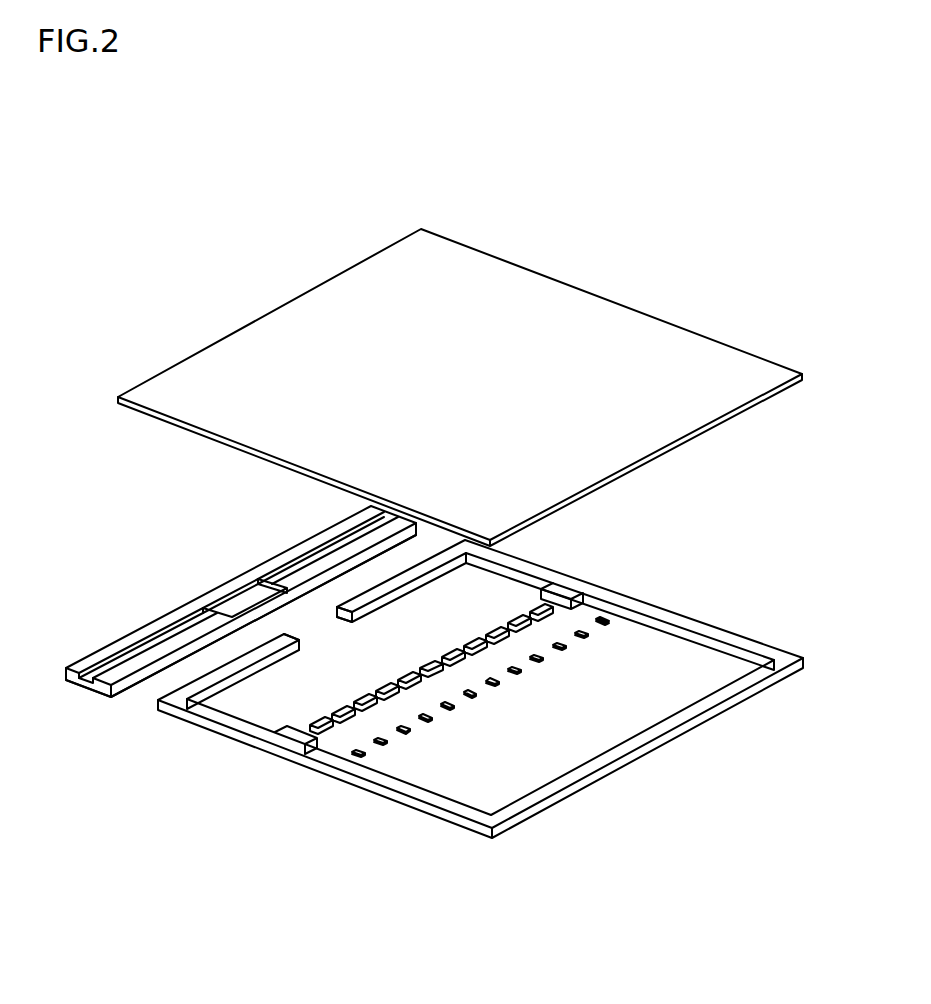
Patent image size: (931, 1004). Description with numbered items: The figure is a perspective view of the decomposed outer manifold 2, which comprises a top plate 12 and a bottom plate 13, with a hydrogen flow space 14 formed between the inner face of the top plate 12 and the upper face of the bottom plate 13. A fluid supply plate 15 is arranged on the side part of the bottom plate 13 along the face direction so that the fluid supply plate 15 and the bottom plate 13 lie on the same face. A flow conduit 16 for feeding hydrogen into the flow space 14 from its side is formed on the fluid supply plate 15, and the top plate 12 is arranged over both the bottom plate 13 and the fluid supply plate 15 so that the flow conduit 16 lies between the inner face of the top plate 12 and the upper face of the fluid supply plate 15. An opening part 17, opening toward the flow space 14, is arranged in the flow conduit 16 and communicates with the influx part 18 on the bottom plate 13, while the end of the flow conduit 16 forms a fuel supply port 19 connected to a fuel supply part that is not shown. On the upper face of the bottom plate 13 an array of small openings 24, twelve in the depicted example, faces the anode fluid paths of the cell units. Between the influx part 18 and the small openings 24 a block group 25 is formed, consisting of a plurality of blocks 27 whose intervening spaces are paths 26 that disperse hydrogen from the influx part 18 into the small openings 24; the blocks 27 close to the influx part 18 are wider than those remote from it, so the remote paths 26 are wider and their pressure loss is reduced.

The outer manifold 2 is at (537, 246).
The top plate 12 is at (612, 323).
The bottom plate 13 is at (745, 640).
The hydrogen flow space 14 is at (465, 674).
The fluid supply plate 15 is at (217, 621).
The flow conduit 16 is at (138, 650).
The opening part 17 is at (263, 600).
The influx part 18 is at (318, 628).
The fuel supply port 19 is at (80, 683).
The small openings 24 is at (605, 620).
The block group 25 is at (411, 676).
The paths 26 is at (527, 603).
The blocks 27 is at (348, 710).